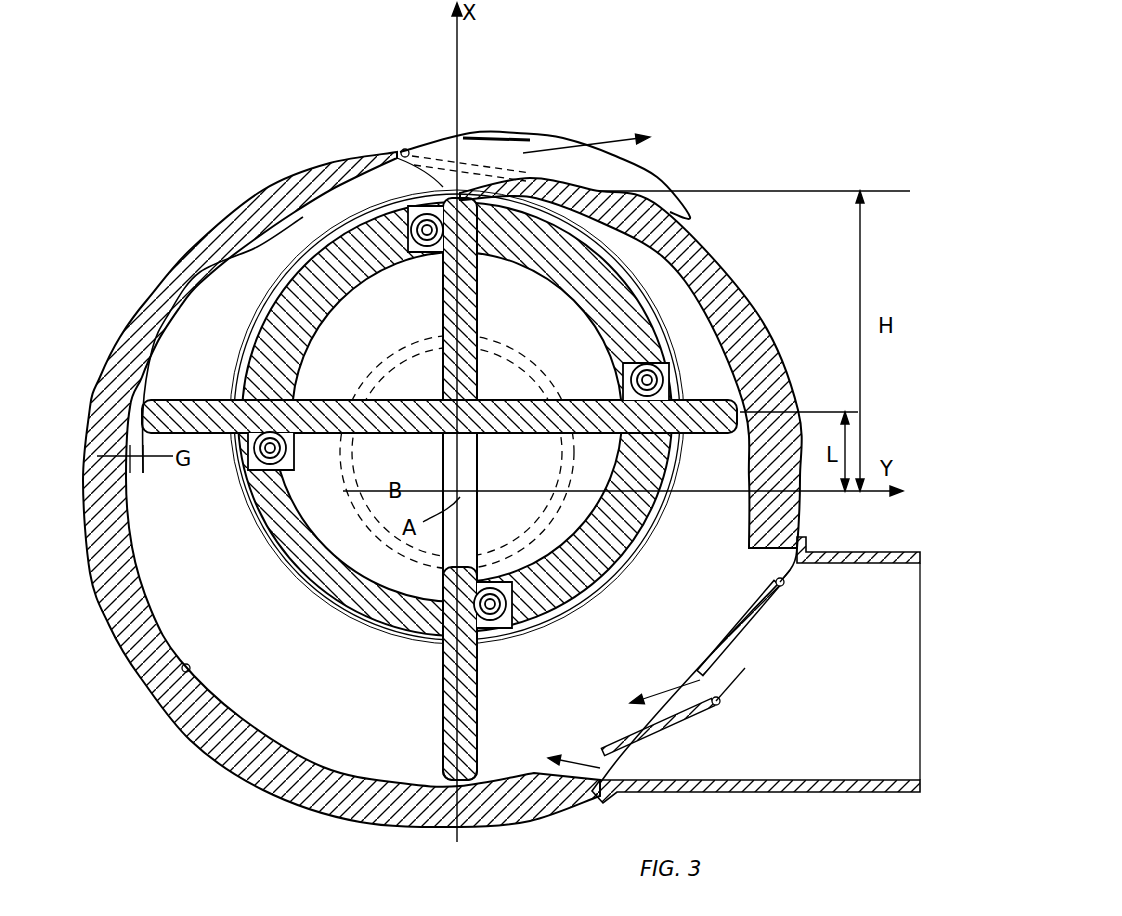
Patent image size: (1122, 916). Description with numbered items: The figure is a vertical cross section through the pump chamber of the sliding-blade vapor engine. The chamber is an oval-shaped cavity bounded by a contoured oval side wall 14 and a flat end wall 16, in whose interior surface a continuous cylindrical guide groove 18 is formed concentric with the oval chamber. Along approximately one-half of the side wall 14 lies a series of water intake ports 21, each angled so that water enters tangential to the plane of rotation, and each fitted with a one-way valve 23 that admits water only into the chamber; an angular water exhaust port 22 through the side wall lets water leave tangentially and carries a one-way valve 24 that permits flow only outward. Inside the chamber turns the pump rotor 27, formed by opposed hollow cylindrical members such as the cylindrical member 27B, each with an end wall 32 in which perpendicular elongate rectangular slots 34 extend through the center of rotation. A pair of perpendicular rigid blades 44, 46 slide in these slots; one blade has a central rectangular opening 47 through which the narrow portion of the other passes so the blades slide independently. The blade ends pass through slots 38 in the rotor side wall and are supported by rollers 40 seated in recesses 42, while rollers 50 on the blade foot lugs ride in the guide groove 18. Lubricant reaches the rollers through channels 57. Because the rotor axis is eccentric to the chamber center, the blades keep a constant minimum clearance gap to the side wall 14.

The side wall 14 is at (162, 706).
The end wall 16 is at (353, 717).
The guide groove 18 is at (457, 417).
The water intake ports 21 is at (753, 643).
The water exhaust port 22 is at (403, 150).
The one-way valve 23 is at (770, 612).
The one-way valve 24 is at (512, 137).
The pump rotor 27 is at (312, 594).
The cylindrical member 27B is at (293, 530).
The end wall 32 is at (409, 311).
The elongate rectangular slots 34 is at (466, 308).
The slot 38 is at (490, 243).
The rollers 40 is at (430, 205).
The recesses 42 is at (414, 225).
The blade 44 is at (480, 705).
The blade 46 is at (133, 433).
The central rectangular opening 47 is at (480, 510).
The roller 50 is at (563, 444).
The channels 57 is at (429, 252).